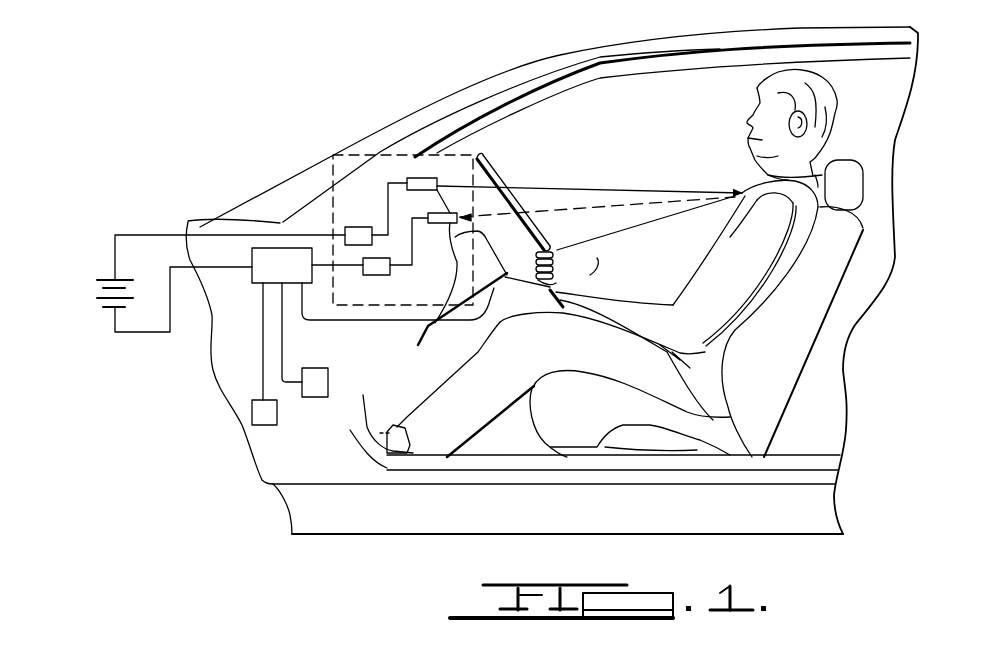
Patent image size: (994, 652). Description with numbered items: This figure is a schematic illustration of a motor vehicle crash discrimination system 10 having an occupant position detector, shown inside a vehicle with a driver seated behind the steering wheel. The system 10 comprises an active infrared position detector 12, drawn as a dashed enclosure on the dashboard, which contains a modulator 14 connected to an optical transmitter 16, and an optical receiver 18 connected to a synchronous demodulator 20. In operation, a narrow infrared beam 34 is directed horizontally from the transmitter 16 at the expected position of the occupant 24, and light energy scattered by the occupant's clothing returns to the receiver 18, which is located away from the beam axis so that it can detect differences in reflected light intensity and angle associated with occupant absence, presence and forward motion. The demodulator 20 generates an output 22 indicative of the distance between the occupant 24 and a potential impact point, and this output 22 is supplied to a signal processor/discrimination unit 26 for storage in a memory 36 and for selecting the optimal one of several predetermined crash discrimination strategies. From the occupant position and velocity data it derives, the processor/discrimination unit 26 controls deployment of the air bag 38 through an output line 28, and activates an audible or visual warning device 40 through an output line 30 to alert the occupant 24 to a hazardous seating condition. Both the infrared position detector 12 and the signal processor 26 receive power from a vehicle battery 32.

The motor vehicle crash discrimination system 10 is at (213, 107).
The active infrared position detector 12 is at (368, 148).
The modulator 14 is at (360, 225).
The optical transmitter 16 is at (428, 175).
The optical receiver 18 is at (437, 234).
The synchronous demodulator 20 is at (376, 279).
The output 22 is at (345, 268).
The occupant 24 is at (748, 123).
The signal processor/discrimination unit 26 is at (258, 286).
The output line 28 is at (382, 322).
The output line 30 is at (283, 341).
The vehicle battery 32 is at (100, 297).
The infrared beam 34 is at (630, 186).
The memory 36 is at (267, 427).
The air bag 38 is at (552, 238).
The warning device 40 is at (312, 399).